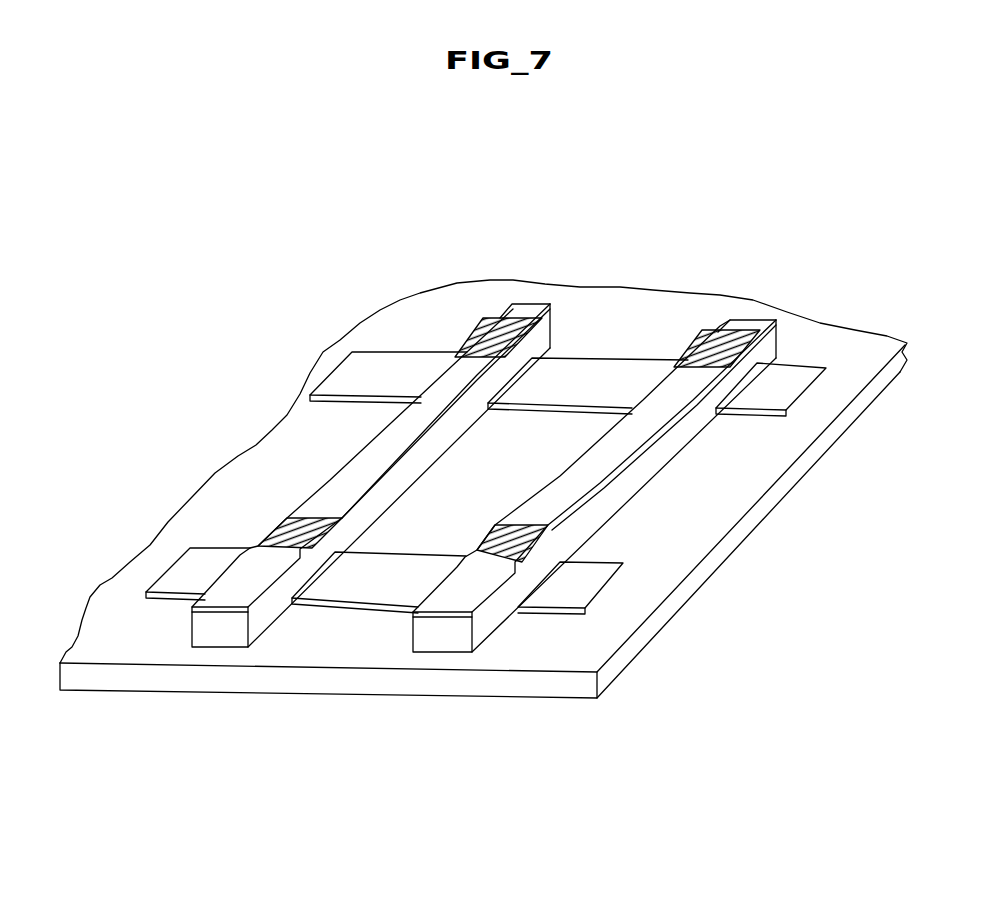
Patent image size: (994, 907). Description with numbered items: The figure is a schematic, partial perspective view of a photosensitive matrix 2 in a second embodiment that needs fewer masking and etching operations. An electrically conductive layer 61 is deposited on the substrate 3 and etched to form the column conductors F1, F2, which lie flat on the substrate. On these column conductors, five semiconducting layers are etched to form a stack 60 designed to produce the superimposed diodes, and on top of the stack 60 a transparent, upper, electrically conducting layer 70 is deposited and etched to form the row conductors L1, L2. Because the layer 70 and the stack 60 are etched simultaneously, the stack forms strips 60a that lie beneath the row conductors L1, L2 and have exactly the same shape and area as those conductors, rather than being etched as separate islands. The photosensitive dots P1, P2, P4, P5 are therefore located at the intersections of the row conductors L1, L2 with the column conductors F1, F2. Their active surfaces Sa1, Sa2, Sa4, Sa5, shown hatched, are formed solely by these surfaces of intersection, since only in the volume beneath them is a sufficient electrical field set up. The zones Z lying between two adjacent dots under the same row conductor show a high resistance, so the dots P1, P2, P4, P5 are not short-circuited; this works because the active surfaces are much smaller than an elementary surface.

The photosensitive matrix 2 is at (788, 208).
The substrate 3 is at (566, 696).
The stack of semiconducting layers 60 is at (192, 633).
The strip 60a is at (562, 336).
The electrically conductive layer 61 is at (597, 586).
The transparent upper electrically conducting layer 70 is at (528, 309).
The row conductor L1 is at (741, 324).
The row conductor L2 is at (514, 314).
The column conductor F1 is at (172, 568).
The column conductor F2 is at (340, 372).
The active surface Sa1 is at (488, 537).
The active surface Sa2 is at (705, 336).
The active surface Sa4 is at (270, 530).
The active surface Sa5 is at (483, 326).
The photosensitive dot P1 is at (601, 549).
The photosensitive dot P2 is at (714, 430).
The photosensitive dot P4 is at (306, 616).
The photosensitive dot P5 is at (560, 350).
The zone Z is at (430, 452).